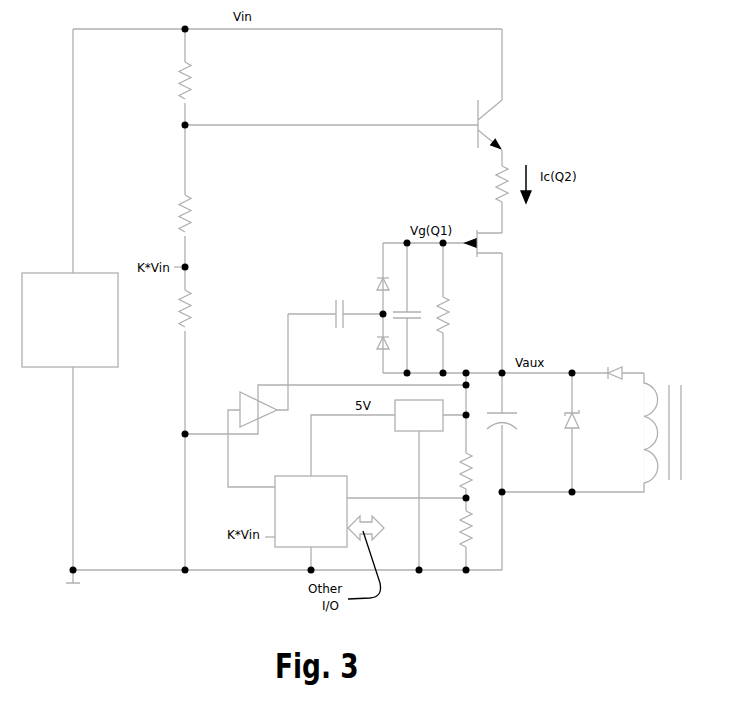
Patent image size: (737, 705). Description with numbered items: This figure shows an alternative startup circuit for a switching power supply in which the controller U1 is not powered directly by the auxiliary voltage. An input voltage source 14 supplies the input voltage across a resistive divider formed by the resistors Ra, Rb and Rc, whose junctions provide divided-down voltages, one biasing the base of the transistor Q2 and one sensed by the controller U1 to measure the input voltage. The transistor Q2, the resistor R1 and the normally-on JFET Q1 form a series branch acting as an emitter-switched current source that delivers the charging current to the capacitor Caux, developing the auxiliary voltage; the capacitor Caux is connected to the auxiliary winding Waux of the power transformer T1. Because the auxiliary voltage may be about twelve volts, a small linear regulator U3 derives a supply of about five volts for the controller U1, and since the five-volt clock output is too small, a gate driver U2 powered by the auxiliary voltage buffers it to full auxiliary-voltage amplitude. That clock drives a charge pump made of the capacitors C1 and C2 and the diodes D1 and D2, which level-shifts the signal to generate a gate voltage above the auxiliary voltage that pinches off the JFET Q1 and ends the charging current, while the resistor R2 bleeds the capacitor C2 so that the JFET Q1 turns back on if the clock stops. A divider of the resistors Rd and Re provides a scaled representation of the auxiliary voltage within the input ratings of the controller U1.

The input voltage source 14 is at (101, 342).
The resistor Ra is at (195, 80).
The resistor Rb is at (196, 213).
The resistor Rc is at (195, 308).
The resistor R1 is at (489, 184).
The resistor R2 is at (452, 315).
The resistor Rd is at (477, 471).
The resistor Re is at (476, 529).
The capacitor C1 is at (330, 316).
The capacitor C2 is at (410, 324).
The capacitor Caux is at (519, 421).
The diode D1 is at (392, 345).
The diode D2 is at (373, 283).
The transistor Q1 is at (519, 244).
The transistor Q2 is at (522, 124).
The controller U1 is at (311, 511).
The gate driver U2 is at (258, 409).
The linear regulator U3 is at (405, 432).
The power transformer T1 is at (666, 346).
The auxiliary winding Waux is at (651, 485).